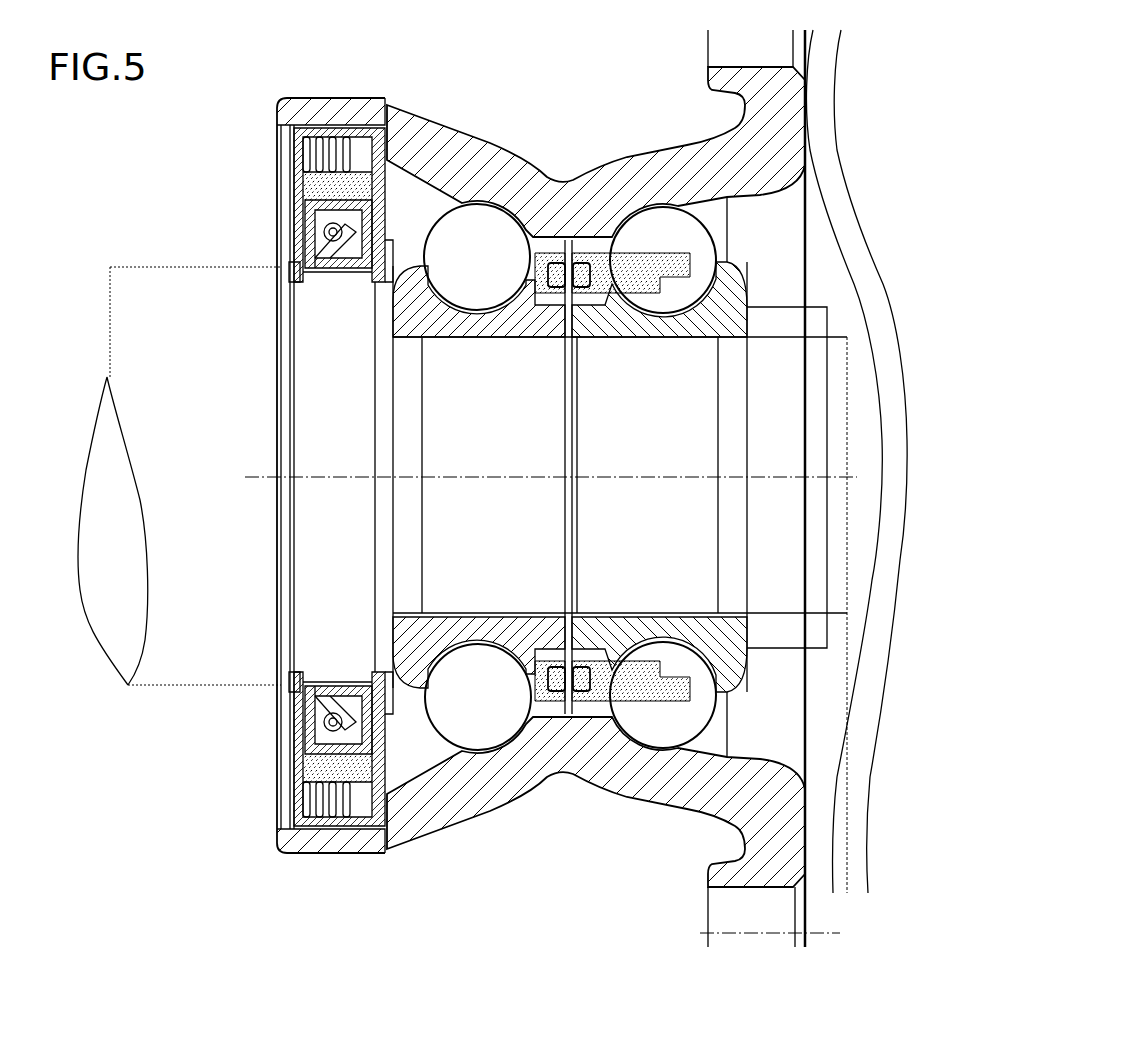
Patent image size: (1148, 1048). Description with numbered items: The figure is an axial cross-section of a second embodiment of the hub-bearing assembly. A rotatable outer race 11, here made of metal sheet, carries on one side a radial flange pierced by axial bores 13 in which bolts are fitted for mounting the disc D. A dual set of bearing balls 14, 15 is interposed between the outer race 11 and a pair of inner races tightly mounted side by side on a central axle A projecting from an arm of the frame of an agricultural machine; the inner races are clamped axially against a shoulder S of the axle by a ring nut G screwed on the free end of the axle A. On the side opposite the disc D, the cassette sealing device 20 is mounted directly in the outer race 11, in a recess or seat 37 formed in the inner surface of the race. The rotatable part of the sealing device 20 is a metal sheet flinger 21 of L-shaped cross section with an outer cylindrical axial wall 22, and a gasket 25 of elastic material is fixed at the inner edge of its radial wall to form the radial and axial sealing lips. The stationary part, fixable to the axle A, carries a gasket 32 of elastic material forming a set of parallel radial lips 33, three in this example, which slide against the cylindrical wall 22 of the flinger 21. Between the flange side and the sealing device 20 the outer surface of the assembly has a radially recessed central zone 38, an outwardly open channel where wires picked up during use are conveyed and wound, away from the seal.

The outer race 11 is at (496, 165).
The axial bores 13 is at (733, 48).
The bearing balls 14 is at (468, 273).
The bearing balls 15 is at (678, 293).
The cassette sealing device 20 is at (574, 487).
The flinger 21 is at (338, 200).
The outer cylindrical axial wall 22 is at (308, 830).
The gasket 25 is at (297, 288).
The gasket 32 is at (288, 166).
The parallel radial lips 33 is at (333, 135).
The seat 37 is at (347, 833).
The central zone 38 is at (697, 823).
The central axle A is at (155, 267).
The ring nut G is at (823, 633).
The disc D is at (865, 667).
The shoulder S is at (387, 292).